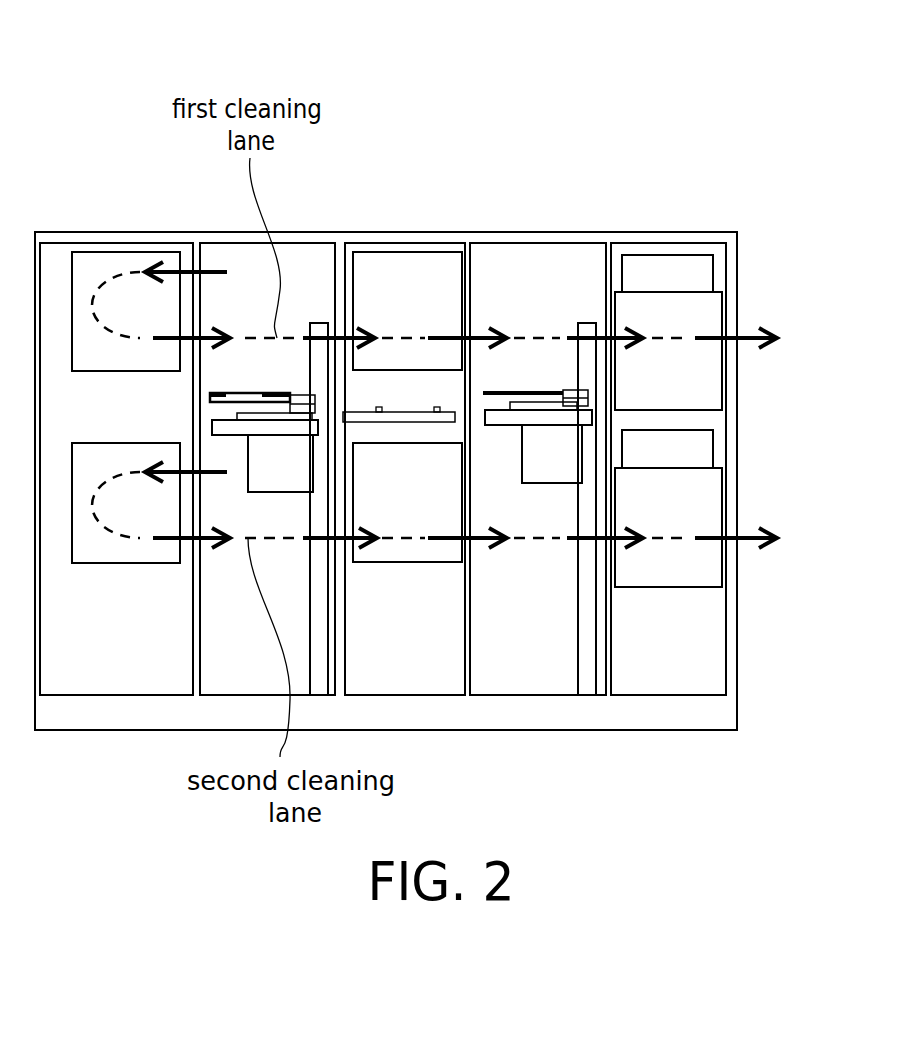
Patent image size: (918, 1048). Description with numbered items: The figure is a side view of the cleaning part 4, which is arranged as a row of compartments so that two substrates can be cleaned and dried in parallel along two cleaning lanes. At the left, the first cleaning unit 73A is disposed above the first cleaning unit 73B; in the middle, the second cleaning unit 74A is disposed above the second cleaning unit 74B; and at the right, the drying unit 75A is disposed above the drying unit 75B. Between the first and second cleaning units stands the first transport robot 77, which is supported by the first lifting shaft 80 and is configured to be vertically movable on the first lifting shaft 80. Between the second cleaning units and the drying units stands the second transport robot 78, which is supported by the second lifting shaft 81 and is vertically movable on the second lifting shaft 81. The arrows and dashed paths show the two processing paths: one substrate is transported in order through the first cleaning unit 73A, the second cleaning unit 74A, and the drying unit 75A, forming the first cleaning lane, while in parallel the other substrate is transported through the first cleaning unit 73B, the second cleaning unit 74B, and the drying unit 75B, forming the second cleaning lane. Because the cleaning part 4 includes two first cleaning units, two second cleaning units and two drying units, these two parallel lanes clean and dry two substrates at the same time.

The cleaning part 4 is at (523, 122).
The first cleaning unit 73A is at (132, 252).
The first cleaning unit 73B is at (123, 563).
The second cleaning unit 74A is at (417, 275).
The second cleaning unit 74B is at (400, 562).
The drying unit 75A is at (712, 315).
The drying unit 75B is at (712, 497).
The first transport robot 77 is at (262, 393).
The second transport robot 78 is at (535, 390).
The first lifting shaft 80 is at (314, 323).
The second lifting shaft 81 is at (587, 322).